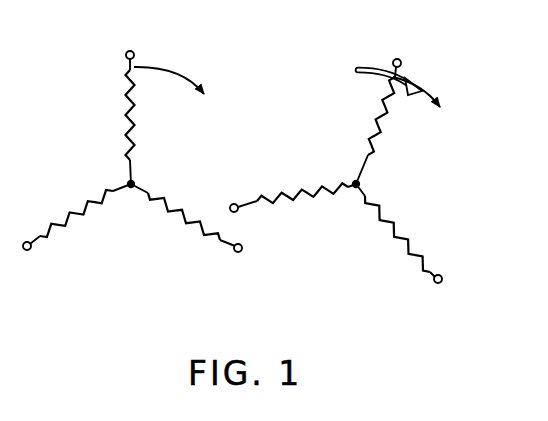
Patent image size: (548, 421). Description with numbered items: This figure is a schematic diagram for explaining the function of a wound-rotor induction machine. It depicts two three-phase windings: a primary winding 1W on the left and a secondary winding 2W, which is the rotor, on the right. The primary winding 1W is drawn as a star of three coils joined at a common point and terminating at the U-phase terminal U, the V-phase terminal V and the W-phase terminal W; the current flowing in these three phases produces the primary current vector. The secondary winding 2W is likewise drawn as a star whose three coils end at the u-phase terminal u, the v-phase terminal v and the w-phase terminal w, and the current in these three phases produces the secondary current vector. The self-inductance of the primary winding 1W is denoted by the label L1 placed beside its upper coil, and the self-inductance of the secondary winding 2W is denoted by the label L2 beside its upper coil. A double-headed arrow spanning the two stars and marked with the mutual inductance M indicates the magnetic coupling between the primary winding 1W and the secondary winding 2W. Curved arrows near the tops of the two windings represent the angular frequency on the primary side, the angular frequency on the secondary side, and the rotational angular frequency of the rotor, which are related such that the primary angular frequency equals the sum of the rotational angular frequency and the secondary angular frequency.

The U-phase of the primary winding U is at (129, 39).
The V-phase of the primary winding V is at (198, 240).
The W-phase of the primary winding W is at (64, 238).
The self-inductance of the primary winding L1 is at (113, 121).
The self-inductance of the secondary winding L2 is at (384, 125).
The mutual inductance M is at (339, 175).
The primary winding 1W is at (132, 197).
The secondary winding 2W is at (351, 198).
The u-phase of the secondary winding u is at (404, 53).
The v-phase of the secondary winding v is at (410, 245).
The w-phase of the secondary winding w is at (287, 197).